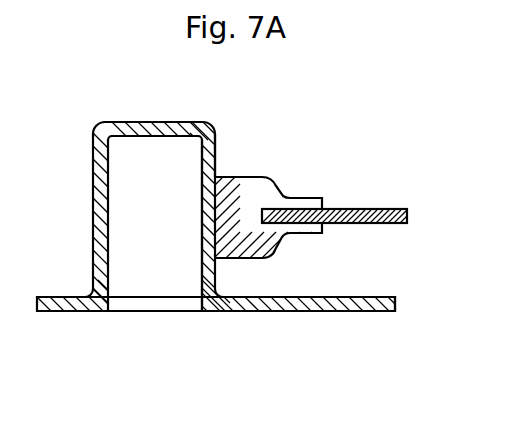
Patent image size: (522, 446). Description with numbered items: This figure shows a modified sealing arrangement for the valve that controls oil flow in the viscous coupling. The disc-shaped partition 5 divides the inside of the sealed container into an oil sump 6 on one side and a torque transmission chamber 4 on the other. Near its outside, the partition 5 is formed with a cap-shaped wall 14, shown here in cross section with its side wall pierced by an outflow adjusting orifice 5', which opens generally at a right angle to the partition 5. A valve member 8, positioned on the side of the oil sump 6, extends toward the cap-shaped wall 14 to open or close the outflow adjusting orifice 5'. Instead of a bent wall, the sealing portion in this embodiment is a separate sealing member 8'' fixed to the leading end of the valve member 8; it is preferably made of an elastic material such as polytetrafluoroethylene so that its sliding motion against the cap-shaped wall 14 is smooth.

The torque transmission chamber 4 is at (263, 317).
The partition 5 is at (309, 332).
The outflow adjusting orifice 5' is at (179, 225).
The oil sump 6 is at (240, 155).
The valve member 8 is at (340, 193).
The sealing member 8'' is at (286, 204).
The cap-shaped wall 14 is at (150, 122).